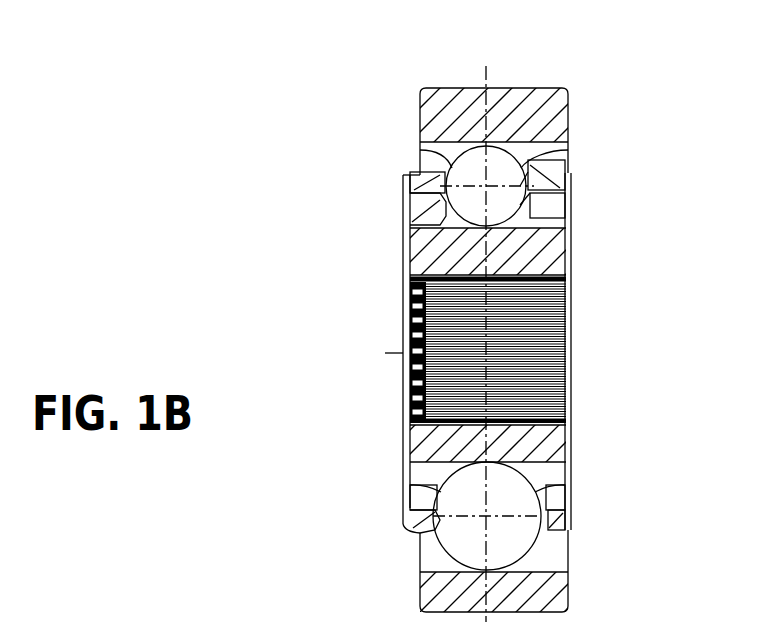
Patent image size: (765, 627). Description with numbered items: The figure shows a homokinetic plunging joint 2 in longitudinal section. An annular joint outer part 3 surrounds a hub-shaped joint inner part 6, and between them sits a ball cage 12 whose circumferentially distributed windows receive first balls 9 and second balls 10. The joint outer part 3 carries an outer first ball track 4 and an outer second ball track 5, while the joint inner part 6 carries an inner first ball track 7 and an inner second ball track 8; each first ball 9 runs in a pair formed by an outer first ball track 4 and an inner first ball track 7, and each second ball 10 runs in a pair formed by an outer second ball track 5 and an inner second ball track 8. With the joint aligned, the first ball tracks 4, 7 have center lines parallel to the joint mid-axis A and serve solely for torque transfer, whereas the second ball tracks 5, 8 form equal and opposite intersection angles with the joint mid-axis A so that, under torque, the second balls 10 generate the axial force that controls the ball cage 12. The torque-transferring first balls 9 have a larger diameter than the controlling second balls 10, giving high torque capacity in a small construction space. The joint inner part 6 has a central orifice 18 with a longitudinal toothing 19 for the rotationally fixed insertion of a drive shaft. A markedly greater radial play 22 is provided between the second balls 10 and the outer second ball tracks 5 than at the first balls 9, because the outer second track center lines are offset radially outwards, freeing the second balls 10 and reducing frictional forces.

The homokinetic plunging joint 2 is at (356, 78).
The joint outer part 3 is at (540, 100).
The outer first ball track 4 is at (558, 556).
The outer second ball track 5 is at (556, 152).
The joint inner part 6 is at (550, 262).
The inner first ball track 7 is at (558, 473).
The inner second ball track 8 is at (403, 220).
The first ball 9 is at (556, 500).
The second ball 10 is at (560, 206).
The ball cage 12 is at (560, 186).
The central orifice 18 is at (392, 383).
The longitudinal toothing 19 is at (572, 315).
The radial play 22 is at (493, 128).
The joint mid-axis A is at (572, 350).